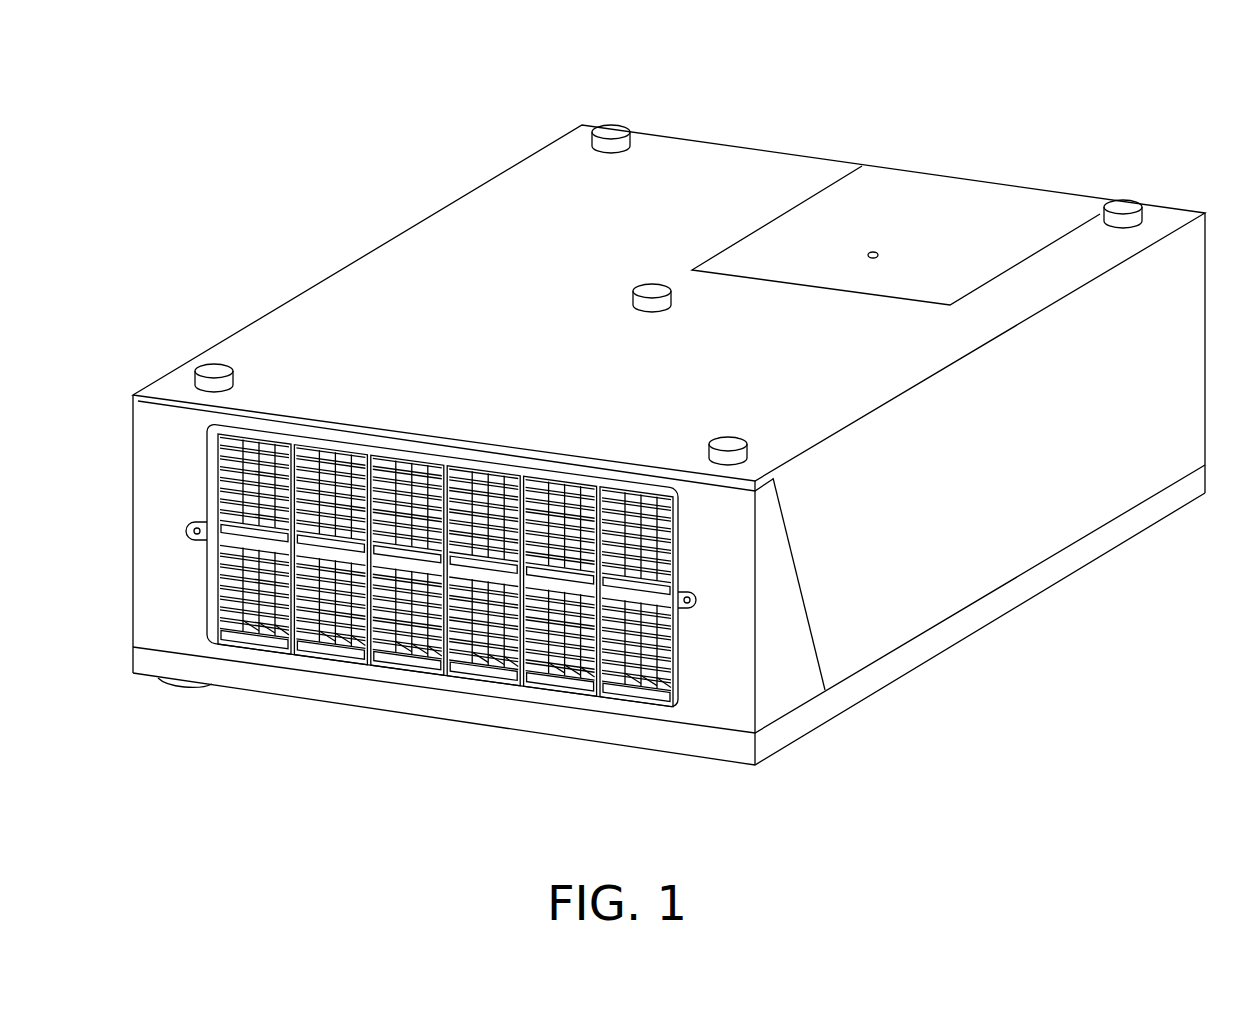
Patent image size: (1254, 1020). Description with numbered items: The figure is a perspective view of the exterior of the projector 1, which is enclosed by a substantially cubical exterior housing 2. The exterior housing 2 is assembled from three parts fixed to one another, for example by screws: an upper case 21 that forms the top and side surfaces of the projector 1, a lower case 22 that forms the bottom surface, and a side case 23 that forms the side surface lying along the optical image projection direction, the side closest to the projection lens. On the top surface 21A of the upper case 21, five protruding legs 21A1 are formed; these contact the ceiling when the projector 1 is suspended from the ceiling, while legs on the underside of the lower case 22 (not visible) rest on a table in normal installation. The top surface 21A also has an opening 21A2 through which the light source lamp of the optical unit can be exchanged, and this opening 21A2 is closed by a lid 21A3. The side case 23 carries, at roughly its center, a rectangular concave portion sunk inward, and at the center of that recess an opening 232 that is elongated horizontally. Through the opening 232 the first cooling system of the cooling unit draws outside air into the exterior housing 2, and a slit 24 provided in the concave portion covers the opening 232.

The projector 1 is at (327, 145).
The exterior housing 2 is at (990, 705).
The upper case 21 is at (860, 638).
The lower case 22 is at (788, 728).
The side case 23 is at (803, 677).
The top surface 21A is at (733, 182).
The protruding legs 21A1 is at (612, 123).
The opening 21A2 is at (830, 292).
The lid 21A3 is at (918, 283).
The slit 24 is at (497, 665).
The opening 232 is at (565, 483).